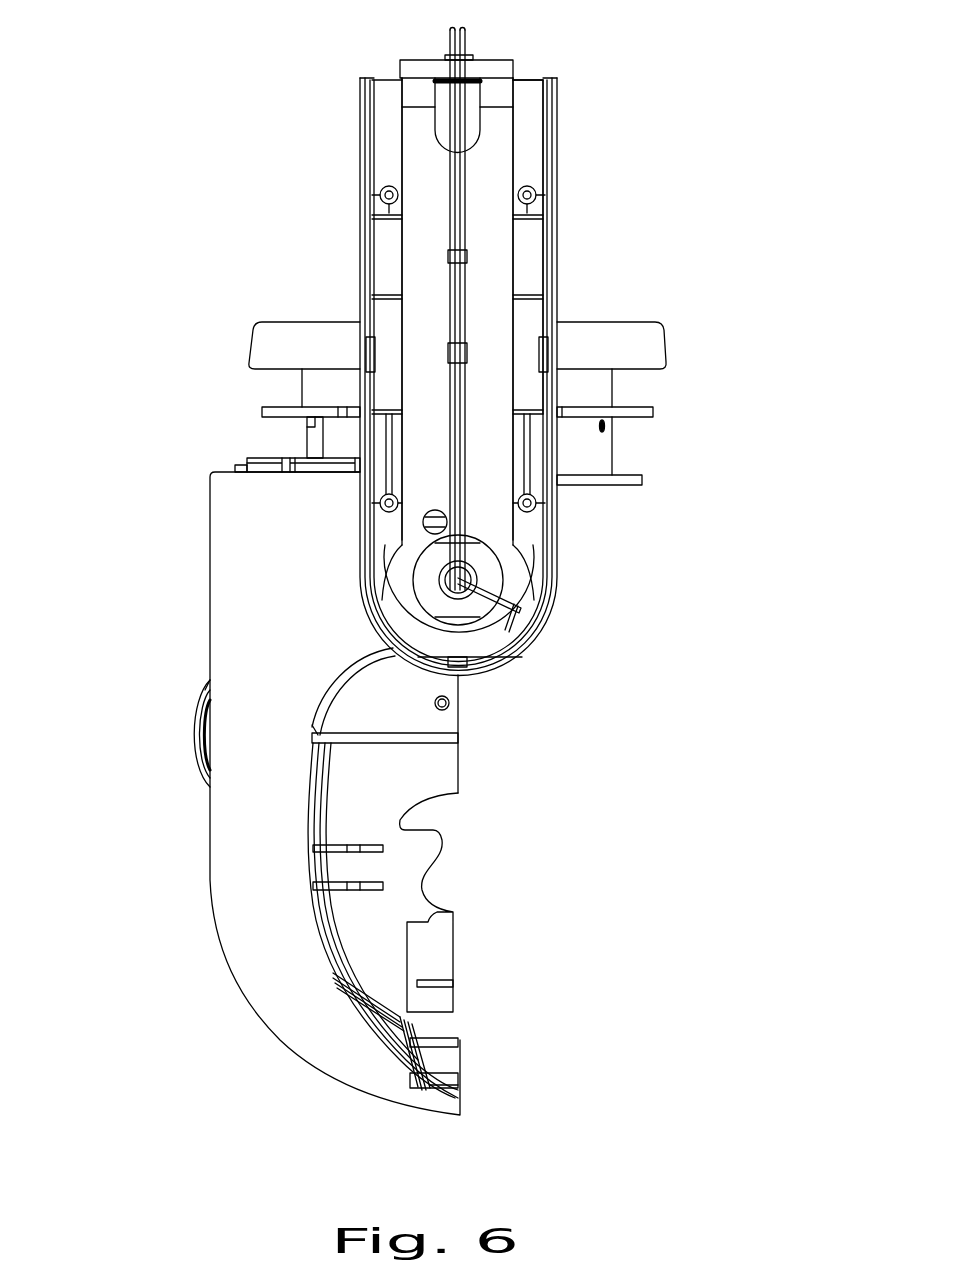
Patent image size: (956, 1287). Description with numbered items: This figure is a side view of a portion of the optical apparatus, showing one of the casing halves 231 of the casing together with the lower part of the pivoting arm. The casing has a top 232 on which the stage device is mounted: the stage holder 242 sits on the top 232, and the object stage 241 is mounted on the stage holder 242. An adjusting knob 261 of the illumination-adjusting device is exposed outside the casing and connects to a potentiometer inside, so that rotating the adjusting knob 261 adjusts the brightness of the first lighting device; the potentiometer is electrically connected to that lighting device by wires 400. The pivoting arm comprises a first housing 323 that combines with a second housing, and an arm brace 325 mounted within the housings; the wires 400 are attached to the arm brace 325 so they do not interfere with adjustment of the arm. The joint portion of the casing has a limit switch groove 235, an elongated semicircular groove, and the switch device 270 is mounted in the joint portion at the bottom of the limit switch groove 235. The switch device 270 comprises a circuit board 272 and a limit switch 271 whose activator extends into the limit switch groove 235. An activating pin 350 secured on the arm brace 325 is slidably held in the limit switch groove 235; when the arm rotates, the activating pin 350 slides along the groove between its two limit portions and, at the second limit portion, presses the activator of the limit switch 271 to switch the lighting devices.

The wires 400 is at (465, 37).
The arm brace 325 is at (478, 172).
The first housing 323 is at (537, 243).
The stage holder 242 is at (302, 389).
The object stage 241 is at (652, 355).
The top 232 is at (228, 470).
The activating pin 350 is at (422, 523).
The limit switch groove 235 is at (398, 597).
The casing halves 231 is at (227, 650).
The adjusting knob 261 is at (195, 745).
The circuit board 272 is at (507, 630).
The switch device 270 is at (505, 643).
The limit switch 271 is at (453, 645).